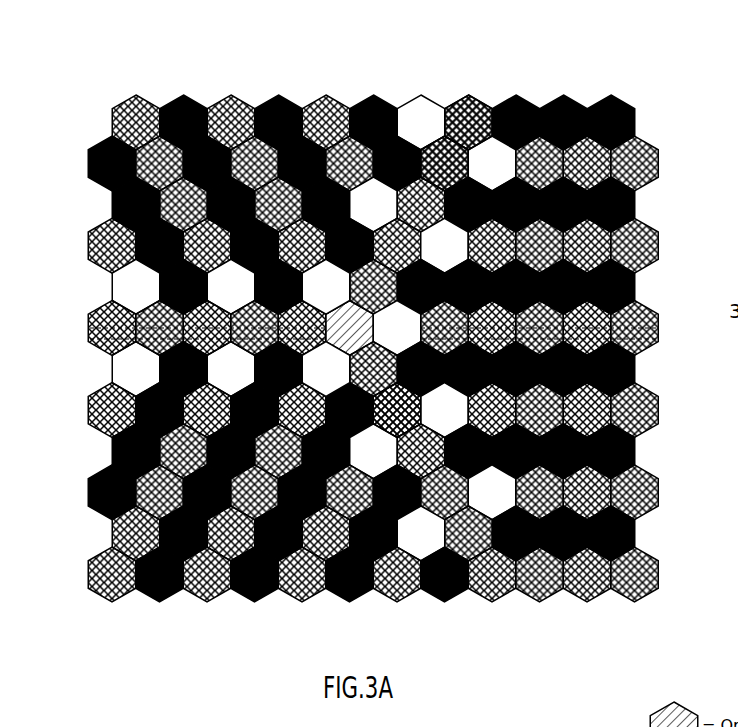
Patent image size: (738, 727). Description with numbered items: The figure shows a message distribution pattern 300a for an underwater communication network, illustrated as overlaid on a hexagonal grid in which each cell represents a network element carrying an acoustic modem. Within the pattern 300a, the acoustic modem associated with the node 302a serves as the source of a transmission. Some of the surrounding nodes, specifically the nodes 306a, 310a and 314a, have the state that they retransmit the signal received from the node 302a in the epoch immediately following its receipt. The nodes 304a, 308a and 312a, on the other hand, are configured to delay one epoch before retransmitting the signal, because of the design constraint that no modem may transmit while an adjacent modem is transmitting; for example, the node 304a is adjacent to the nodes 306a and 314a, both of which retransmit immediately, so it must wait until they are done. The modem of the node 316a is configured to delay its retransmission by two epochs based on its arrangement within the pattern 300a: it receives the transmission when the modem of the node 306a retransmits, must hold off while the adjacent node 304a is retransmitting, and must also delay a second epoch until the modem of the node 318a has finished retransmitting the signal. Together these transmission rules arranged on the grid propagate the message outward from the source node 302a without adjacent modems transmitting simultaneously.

The message distribution pattern 300a is at (182, 73).
The node 302a is at (95, 345).
The node 304a is at (655, 340).
The node 306a is at (436, 145).
The node 308a is at (337, 283).
The node 310a is at (93, 318).
The node 312a is at (318, 380).
The node 314a is at (402, 398).
The node 316a is at (468, 136).
The node 318a is at (658, 314).